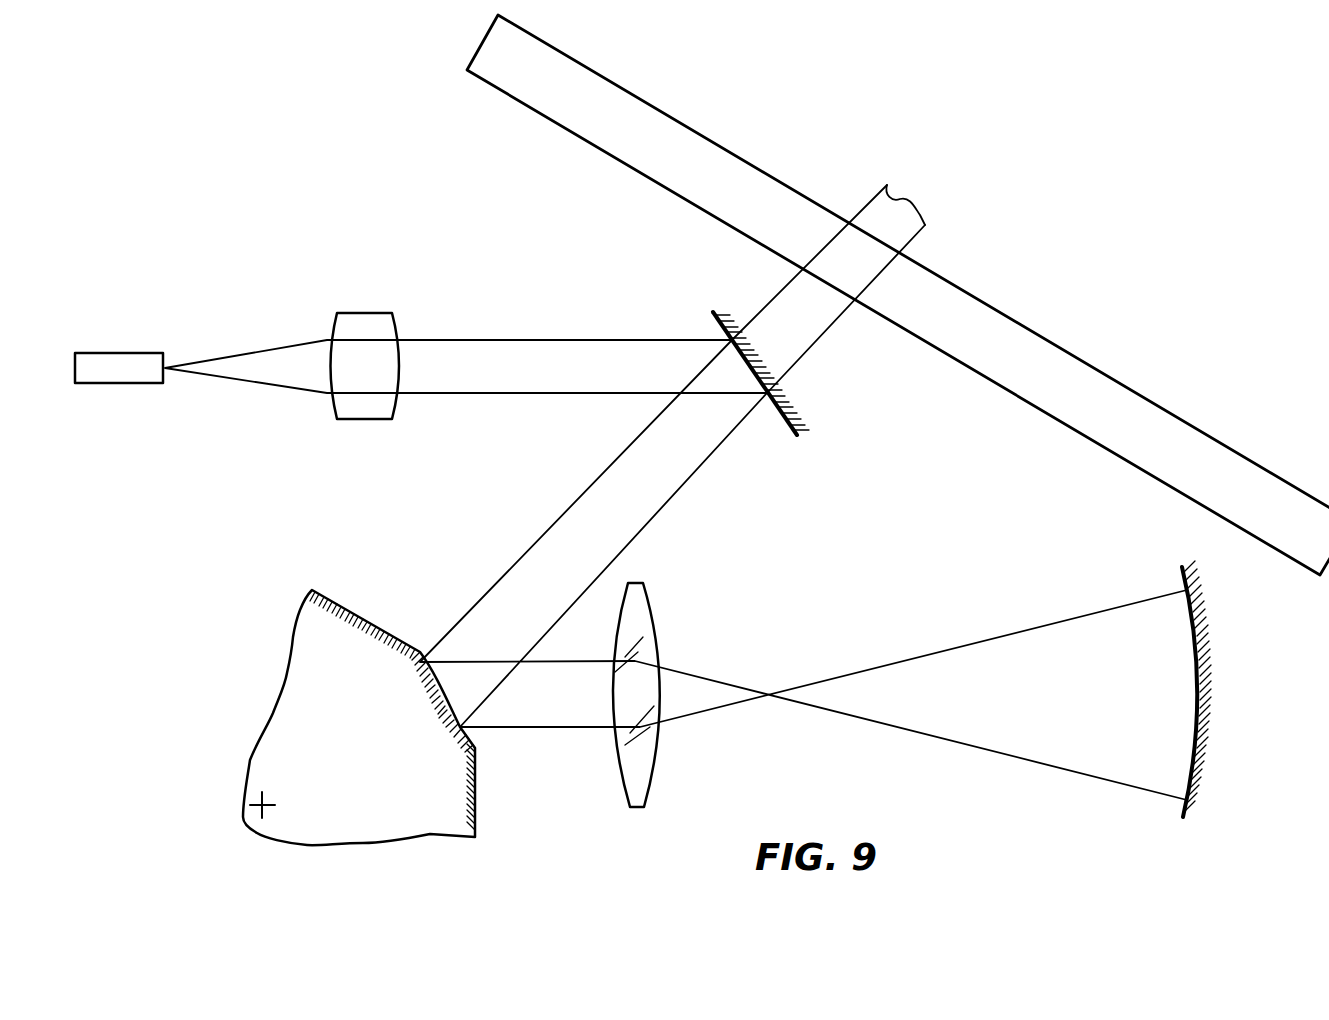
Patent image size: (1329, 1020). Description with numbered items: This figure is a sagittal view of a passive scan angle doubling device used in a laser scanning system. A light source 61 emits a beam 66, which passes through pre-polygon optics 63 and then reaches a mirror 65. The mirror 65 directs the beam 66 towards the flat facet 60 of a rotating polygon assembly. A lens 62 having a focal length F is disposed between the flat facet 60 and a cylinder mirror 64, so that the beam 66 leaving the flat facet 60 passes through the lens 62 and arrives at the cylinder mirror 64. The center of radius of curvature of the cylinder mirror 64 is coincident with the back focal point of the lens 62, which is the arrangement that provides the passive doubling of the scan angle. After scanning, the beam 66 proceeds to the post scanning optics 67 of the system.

The flat facet 60 is at (477, 751).
The light source 61 is at (120, 386).
The lens 62 is at (651, 778).
The pre-polygon optics 63 is at (398, 405).
The cylinder mirror 64 is at (1185, 805).
The mirror 65 is at (788, 428).
The beam 66 is at (265, 387).
The post scanning optics 67 is at (1187, 423).